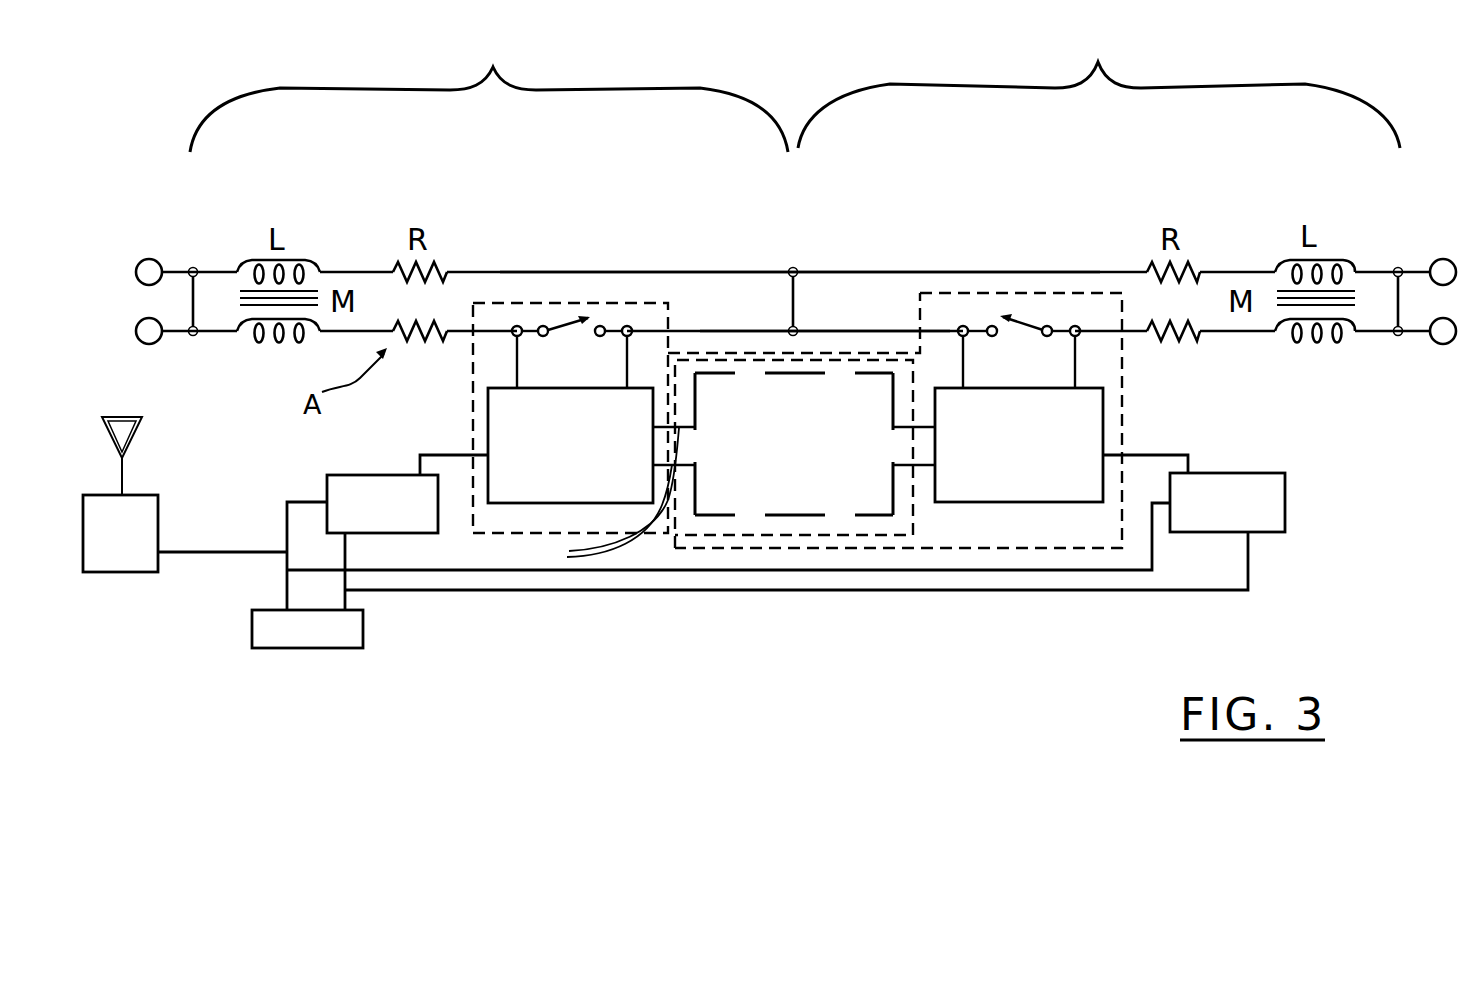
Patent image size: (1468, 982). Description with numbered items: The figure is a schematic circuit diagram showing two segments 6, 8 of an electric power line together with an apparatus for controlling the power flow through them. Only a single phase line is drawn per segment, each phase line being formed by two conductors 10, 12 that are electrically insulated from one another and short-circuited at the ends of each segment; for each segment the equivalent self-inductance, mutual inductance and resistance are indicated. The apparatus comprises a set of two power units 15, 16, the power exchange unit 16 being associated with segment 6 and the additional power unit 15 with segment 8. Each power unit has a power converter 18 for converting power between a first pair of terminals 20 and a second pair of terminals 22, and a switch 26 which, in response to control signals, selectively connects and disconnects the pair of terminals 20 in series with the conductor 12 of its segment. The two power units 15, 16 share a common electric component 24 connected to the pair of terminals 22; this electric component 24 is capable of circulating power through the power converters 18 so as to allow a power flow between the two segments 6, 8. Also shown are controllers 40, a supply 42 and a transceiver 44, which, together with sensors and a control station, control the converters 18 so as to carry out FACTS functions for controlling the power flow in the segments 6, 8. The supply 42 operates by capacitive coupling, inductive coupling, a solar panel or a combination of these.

The segment 6 is at (489, 89).
The segment 8 is at (1099, 86).
The conductor 10 is at (693, 270).
The conductor 12 is at (760, 330).
The additional power unit 15 is at (1112, 432).
The power exchange unit 16 is at (473, 425).
The power converter 18 is at (584, 475).
The first pair of terminals 20 is at (626, 371).
The second pair of terminals 22 is at (604, 498).
The electric component 24 is at (811, 463).
The switch 26 is at (560, 326).
The controller 40 is at (328, 477).
The supply 42 is at (345, 640).
The transceiver 44 is at (118, 553).